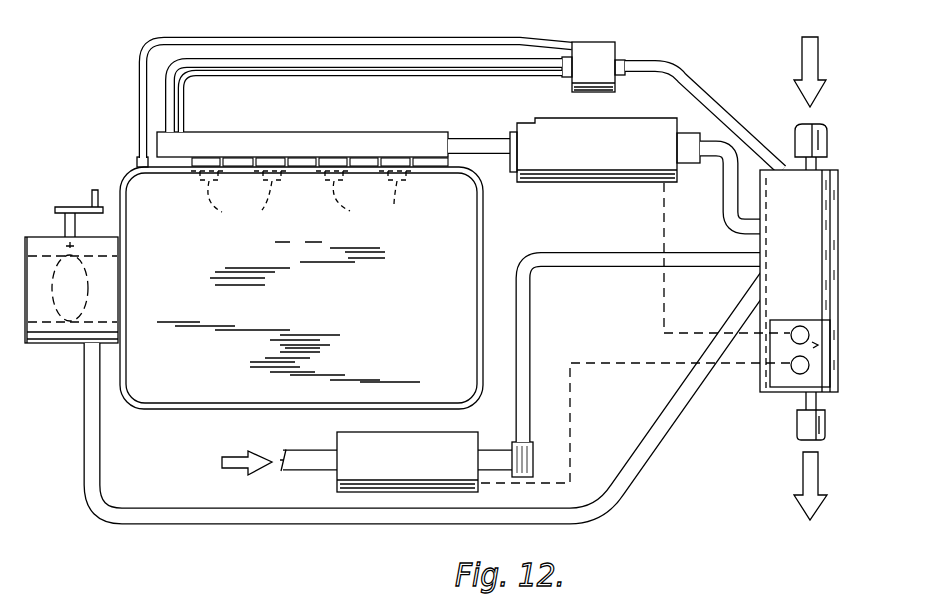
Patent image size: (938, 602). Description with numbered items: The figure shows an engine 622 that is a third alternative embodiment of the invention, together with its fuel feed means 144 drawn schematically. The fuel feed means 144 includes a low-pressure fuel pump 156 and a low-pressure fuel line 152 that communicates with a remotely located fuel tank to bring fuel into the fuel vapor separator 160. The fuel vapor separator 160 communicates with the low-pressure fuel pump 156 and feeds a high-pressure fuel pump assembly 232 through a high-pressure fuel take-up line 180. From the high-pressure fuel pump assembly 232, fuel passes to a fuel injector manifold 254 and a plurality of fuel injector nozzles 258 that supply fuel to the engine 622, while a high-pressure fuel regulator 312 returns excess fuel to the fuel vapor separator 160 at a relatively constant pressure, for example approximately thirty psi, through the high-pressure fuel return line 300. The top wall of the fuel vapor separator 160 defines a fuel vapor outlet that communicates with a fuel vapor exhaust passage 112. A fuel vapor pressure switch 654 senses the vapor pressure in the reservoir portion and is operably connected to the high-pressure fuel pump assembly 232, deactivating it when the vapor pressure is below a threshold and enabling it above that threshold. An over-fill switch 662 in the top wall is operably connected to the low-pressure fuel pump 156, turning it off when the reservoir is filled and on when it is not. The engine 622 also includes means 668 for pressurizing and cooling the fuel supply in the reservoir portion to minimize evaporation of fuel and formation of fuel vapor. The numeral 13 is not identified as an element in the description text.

The fitting 13 is at (834, 166).
The fuel vapor exhaust passage 112 is at (640, 460).
The fuel feed means 144 is at (645, 304).
The low-pressure fuel line 152 is at (572, 251).
The low-pressure fuel pump 156 is at (430, 474).
The fuel vapor separator 160 is at (813, 258).
The high-pressure fuel take-up line 180 is at (724, 187).
The high-pressure fuel pump assembly 232 is at (623, 160).
The fuel injector manifold 254 is at (313, 132).
The fuel injector nozzles 258 is at (303, 200).
The high-pressure fuel return line 300 is at (493, 68).
The high-pressure fuel regulator 312 is at (616, 26).
The engine 622 is at (333, 305).
The fuel vapor pressure switch 654 is at (809, 334).
The over-fill switch 662 is at (809, 365).
The means for pressurizing and cooling the fuel supply 668 is at (750, 391).